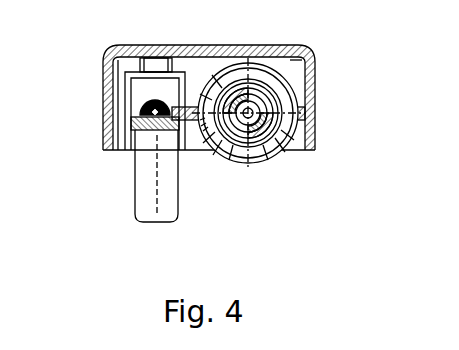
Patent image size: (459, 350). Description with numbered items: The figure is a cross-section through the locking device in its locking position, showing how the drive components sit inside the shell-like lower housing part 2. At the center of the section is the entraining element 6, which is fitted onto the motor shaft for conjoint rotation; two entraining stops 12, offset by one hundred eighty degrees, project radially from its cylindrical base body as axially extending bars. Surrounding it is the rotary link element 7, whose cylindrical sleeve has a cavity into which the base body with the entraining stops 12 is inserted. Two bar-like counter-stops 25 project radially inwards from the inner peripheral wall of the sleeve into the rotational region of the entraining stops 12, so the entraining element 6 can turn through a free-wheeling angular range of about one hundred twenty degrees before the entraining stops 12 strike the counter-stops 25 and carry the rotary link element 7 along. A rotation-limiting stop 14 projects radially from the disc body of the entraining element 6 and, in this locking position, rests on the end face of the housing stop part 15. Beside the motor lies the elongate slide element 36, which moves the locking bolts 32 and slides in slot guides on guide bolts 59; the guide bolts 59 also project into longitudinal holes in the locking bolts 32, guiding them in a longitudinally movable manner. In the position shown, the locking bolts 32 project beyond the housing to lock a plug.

The lower housing part 2 is at (116, 50).
The entraining element 6 is at (262, 150).
The rotary link element 7 is at (235, 150).
The entraining stops 12 is at (207, 155).
The rotation-limiting stop 14 is at (287, 107).
The housing stop part 15 is at (275, 75).
The counter-stops 25 is at (287, 102).
The locking bolts 32 is at (143, 200).
The slide element 36 is at (125, 103).
The guide bolts 59 is at (157, 93).